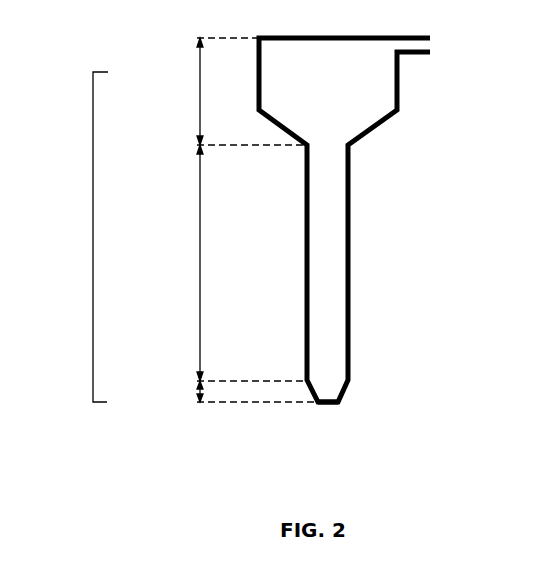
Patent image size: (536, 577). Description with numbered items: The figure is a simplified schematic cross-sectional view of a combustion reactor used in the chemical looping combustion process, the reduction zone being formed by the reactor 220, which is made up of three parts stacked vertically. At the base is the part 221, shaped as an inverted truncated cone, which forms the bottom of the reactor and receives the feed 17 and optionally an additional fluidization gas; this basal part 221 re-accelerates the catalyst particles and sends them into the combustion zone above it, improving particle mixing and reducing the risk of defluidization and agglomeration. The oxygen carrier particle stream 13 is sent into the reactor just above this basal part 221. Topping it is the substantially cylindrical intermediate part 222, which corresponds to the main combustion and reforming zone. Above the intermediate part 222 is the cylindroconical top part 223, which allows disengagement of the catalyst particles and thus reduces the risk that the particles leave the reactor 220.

The oxygen carrier particle stream 13 is at (356, 380).
The feed 17 is at (386, 432).
The reactor 220 is at (93, 240).
The basal part 221 is at (197, 400).
The intermediate part 222 is at (200, 251).
The top part 223 is at (197, 95).